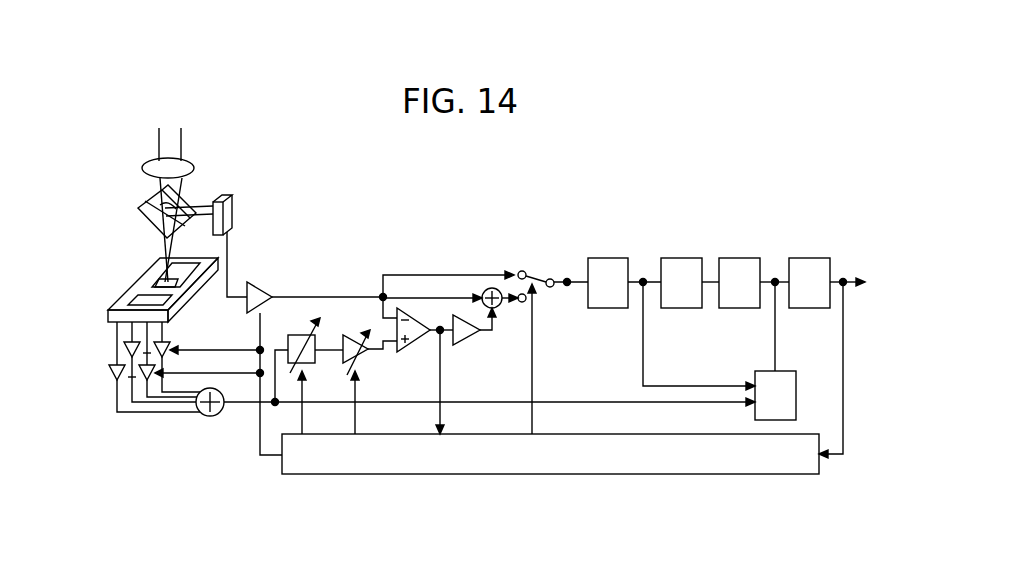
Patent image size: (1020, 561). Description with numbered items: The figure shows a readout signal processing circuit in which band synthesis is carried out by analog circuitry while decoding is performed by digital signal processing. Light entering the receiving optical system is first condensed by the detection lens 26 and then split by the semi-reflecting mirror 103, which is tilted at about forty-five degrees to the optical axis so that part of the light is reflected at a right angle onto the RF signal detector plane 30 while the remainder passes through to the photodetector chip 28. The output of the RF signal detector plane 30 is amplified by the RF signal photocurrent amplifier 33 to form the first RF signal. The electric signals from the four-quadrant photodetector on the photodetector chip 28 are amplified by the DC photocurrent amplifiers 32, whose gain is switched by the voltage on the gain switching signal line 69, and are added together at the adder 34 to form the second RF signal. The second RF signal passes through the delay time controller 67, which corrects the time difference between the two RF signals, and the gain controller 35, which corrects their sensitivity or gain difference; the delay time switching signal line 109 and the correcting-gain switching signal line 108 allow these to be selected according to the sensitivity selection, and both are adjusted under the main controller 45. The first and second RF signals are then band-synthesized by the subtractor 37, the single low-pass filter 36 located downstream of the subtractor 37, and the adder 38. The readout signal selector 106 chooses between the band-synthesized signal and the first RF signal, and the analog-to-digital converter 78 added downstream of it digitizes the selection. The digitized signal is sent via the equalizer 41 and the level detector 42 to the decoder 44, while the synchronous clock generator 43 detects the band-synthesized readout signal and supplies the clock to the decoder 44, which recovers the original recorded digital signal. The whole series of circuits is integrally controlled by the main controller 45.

The detection lens 26 is at (194, 168).
The RF signal detector plane 30 is at (233, 210).
The semi-reflecting mirror 103 is at (148, 222).
The photodetector chip 28 is at (140, 275).
The DC photocurrent amplifiers 32 is at (114, 380).
The RF signal photocurrent amplifier 33 is at (258, 282).
The adder 34 is at (209, 417).
The gain switching signal line 69 is at (258, 432).
The delay time controller 67 is at (296, 334).
The gain controller 35 is at (353, 335).
The subtractor 37 is at (414, 342).
The low-pass filter 36 is at (463, 340).
The adder 38 is at (499, 306).
The readout signal selector 106 is at (538, 278).
The analog-to-digital converter 78 is at (617, 258).
The equalizer 41 is at (690, 258).
The level detector 42 is at (747, 258).
The decoder 44 is at (815, 258).
The synchronous clock generator 43 is at (762, 371).
The main controller 45 is at (700, 474).
The delay time switching signal line 109 is at (304, 418).
The correcting-gain switching signal line 108 is at (357, 418).